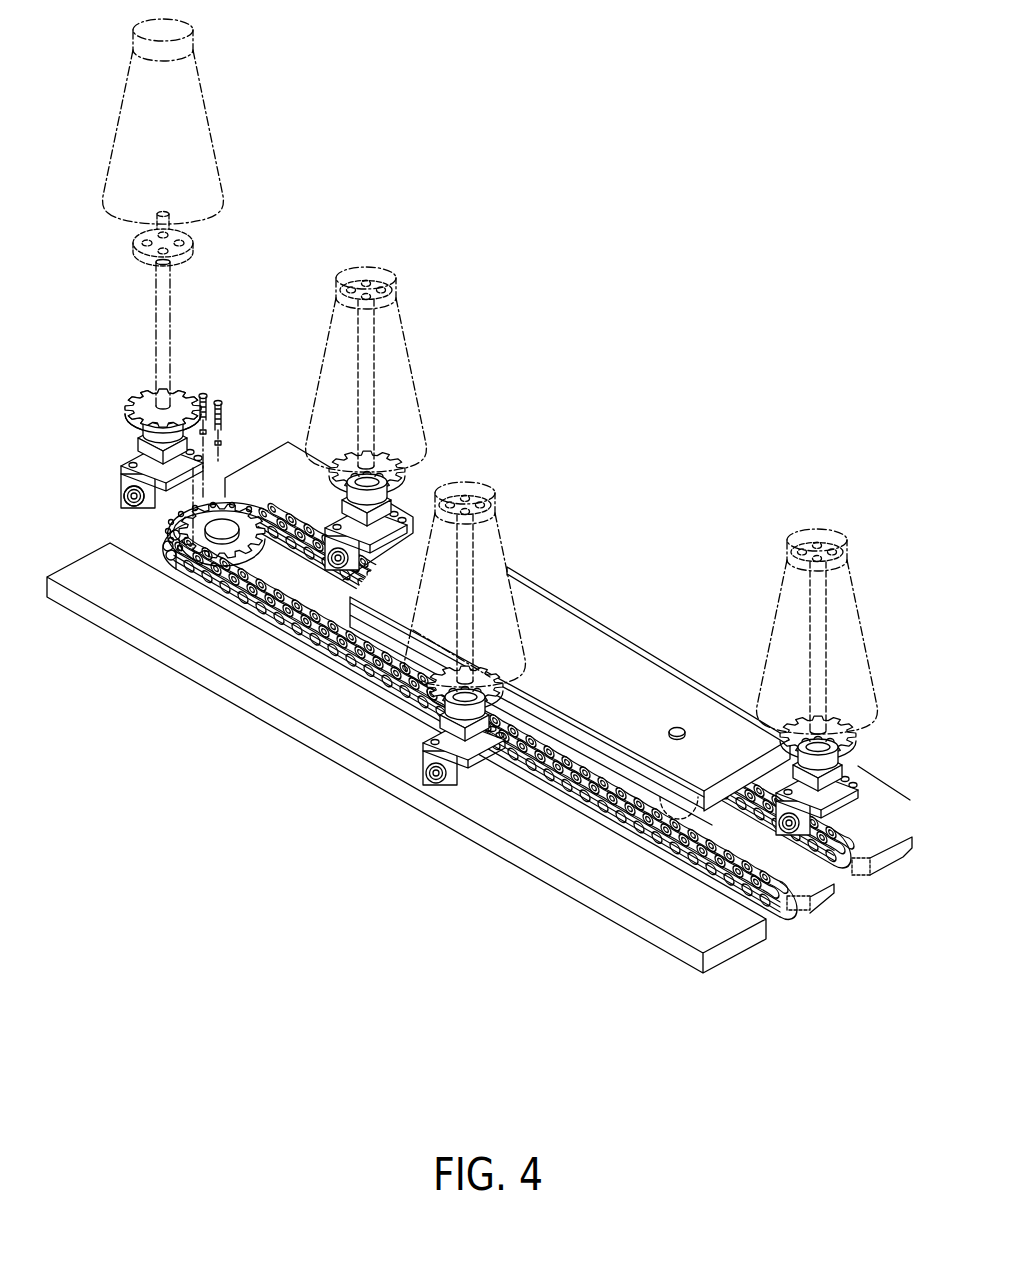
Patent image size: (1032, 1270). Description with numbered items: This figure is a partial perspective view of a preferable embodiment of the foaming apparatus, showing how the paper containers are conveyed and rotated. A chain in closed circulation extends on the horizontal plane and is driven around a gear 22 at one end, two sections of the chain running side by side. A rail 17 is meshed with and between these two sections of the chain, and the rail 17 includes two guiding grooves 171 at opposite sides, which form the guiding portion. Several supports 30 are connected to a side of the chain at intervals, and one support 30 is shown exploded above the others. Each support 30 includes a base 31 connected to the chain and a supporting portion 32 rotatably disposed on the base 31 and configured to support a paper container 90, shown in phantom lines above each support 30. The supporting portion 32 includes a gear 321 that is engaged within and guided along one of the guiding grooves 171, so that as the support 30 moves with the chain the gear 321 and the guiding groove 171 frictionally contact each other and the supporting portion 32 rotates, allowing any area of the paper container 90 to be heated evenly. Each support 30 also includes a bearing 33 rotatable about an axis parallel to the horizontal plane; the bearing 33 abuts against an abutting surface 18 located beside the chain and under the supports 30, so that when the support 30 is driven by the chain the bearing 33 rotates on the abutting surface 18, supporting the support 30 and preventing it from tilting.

The rail 17 is at (588, 657).
The guiding groove 171 is at (545, 778).
The abutting surface 18 is at (597, 874).
The gear 22 is at (222, 547).
The support 30 is at (151, 285).
The base 31 is at (144, 467).
The supporting portion 32 is at (130, 335).
The gear 321 is at (182, 402).
The bearing 33 is at (123, 497).
The paper container 90 is at (783, 638).